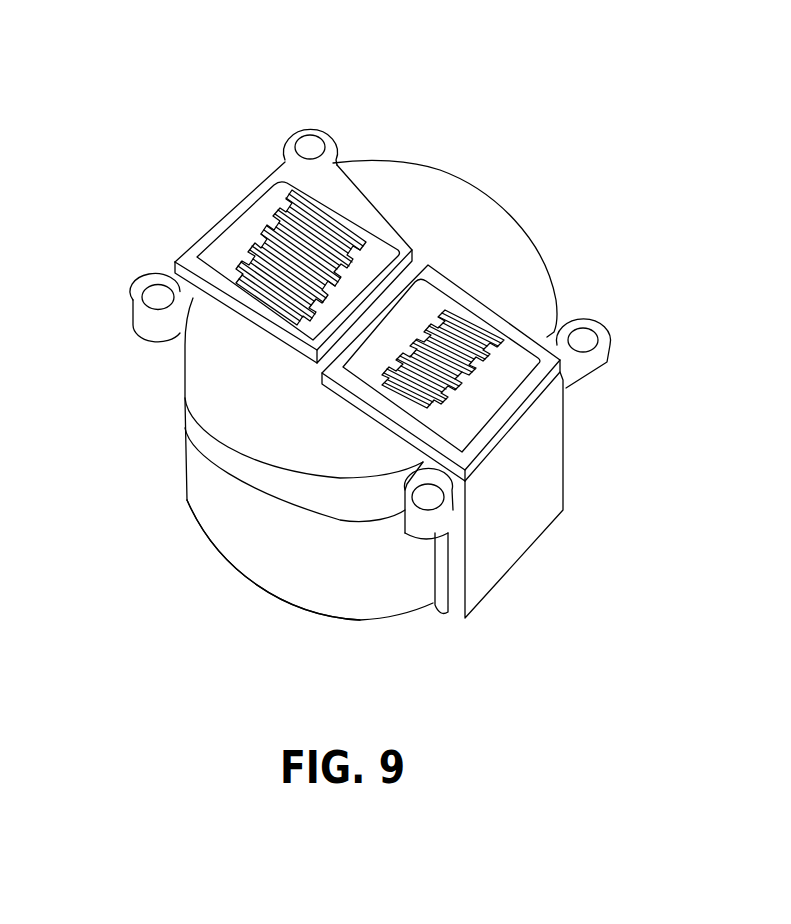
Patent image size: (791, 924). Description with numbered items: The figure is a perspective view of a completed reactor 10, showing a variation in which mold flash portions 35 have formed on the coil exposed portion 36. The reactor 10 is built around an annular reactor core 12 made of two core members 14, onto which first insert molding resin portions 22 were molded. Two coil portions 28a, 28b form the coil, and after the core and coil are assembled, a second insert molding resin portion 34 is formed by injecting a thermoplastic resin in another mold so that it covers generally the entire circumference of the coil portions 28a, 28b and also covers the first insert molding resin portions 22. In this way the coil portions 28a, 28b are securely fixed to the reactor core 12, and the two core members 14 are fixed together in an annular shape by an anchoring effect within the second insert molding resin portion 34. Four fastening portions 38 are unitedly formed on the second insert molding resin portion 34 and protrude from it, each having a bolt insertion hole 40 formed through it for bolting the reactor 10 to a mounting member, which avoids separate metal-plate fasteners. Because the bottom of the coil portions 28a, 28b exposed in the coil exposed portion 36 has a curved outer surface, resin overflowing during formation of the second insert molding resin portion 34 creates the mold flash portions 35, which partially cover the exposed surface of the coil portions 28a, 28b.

The reactor 10 is at (544, 125).
The reactor core 12 is at (265, 577).
The core member 14 is at (248, 573).
The first insert molding resin portion 22 is at (226, 396).
The coil portion 28a is at (467, 330).
The coil portion 28b is at (332, 201).
The second insert molding resin portion 34 is at (517, 557).
The mold flash portion 35 is at (233, 238).
The coil exposed portion 36 is at (247, 200).
The fastening portion 38 is at (293, 127).
The bolt insertion hole 40 is at (310, 147).